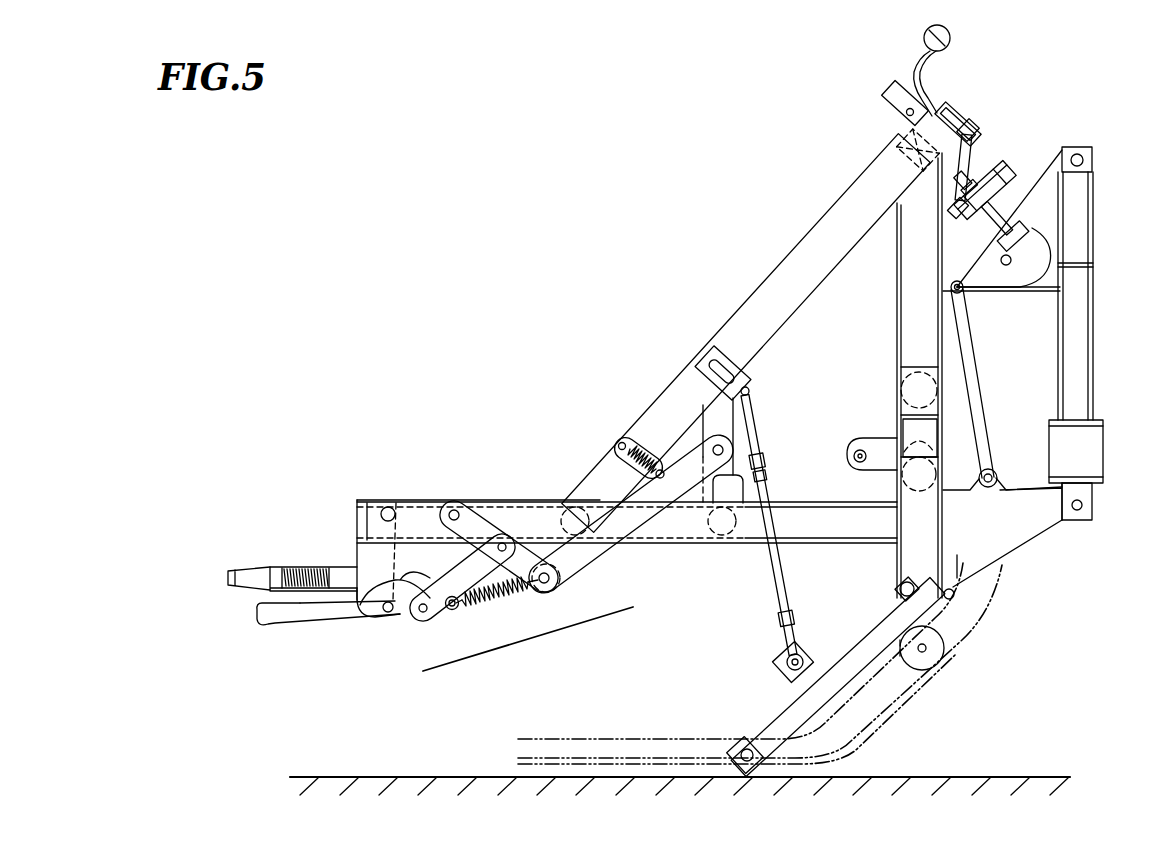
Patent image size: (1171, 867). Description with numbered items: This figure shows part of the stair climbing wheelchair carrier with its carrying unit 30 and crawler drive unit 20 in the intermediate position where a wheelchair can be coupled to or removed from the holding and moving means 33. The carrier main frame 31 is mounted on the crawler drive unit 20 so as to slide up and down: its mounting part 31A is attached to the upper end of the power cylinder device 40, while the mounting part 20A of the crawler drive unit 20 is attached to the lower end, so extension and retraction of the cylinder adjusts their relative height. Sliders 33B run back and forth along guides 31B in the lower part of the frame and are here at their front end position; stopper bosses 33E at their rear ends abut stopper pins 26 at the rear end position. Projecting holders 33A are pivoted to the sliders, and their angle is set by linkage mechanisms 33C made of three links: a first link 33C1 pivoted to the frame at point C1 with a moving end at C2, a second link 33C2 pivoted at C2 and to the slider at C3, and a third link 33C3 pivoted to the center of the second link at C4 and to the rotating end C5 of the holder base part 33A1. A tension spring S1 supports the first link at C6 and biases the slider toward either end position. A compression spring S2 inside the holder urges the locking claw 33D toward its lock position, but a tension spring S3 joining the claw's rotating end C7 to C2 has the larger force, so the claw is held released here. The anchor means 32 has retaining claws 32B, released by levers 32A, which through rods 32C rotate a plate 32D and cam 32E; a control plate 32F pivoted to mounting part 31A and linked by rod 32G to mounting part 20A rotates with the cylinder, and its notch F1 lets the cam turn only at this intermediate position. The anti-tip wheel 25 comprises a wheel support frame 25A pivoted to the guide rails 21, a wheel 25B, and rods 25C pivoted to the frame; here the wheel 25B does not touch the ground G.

The crawler drive unit 20 is at (1000, 636).
The mounting part of the crawler drive unit 20A is at (1034, 548).
The guide rails 21 is at (672, 748).
The anti-tip wheel 25 is at (963, 671).
The wheel support frame 25A is at (856, 665).
The wheel 25B is at (941, 678).
The rods 25C is at (783, 562).
The stopper pins 26 is at (860, 452).
The carrying unit 30 is at (767, 226).
The carrier main frame 31 is at (850, 218).
The mounting part of the carrier main frame 31A is at (1092, 158).
The guides 31B is at (815, 512).
The anchor means 32 is at (969, 109).
The levers 32A is at (950, 38).
The retaining claws 32B is at (882, 92).
The rods 32C is at (970, 140).
The plate 32D is at (989, 160).
The cam 32E is at (998, 196).
The control plate 32F is at (1052, 262).
The rod 32G is at (984, 382).
The holding and moving means 33 is at (375, 462).
The projecting holders 33A is at (268, 568).
The base part of the projecting holder 33A1 is at (392, 616).
The sliders 33B is at (508, 500).
The linkage mechanisms 33C is at (528, 644).
The first link 33C1 is at (652, 522).
The second link 33C2 is at (487, 530).
The third link 33C3 is at (460, 578).
The locking claw 33D is at (289, 620).
The stopper bosses 33E is at (745, 486).
The power cylinder device 40 is at (1094, 307).
The point c1 C1 is at (711, 440).
The point c2 C2 is at (548, 584).
The point c3 C3 is at (454, 509).
The point c4 C4 is at (504, 543).
The point c5 C5 is at (424, 612).
The point c6 C6 is at (625, 441).
The rotating end c7 C7 is at (456, 608).
The tension spring S1 is at (621, 448).
The compression spring S2 is at (311, 567).
The tension spring S3 is at (497, 598).
The notch F1 is at (1032, 230).
The ground G is at (973, 837).